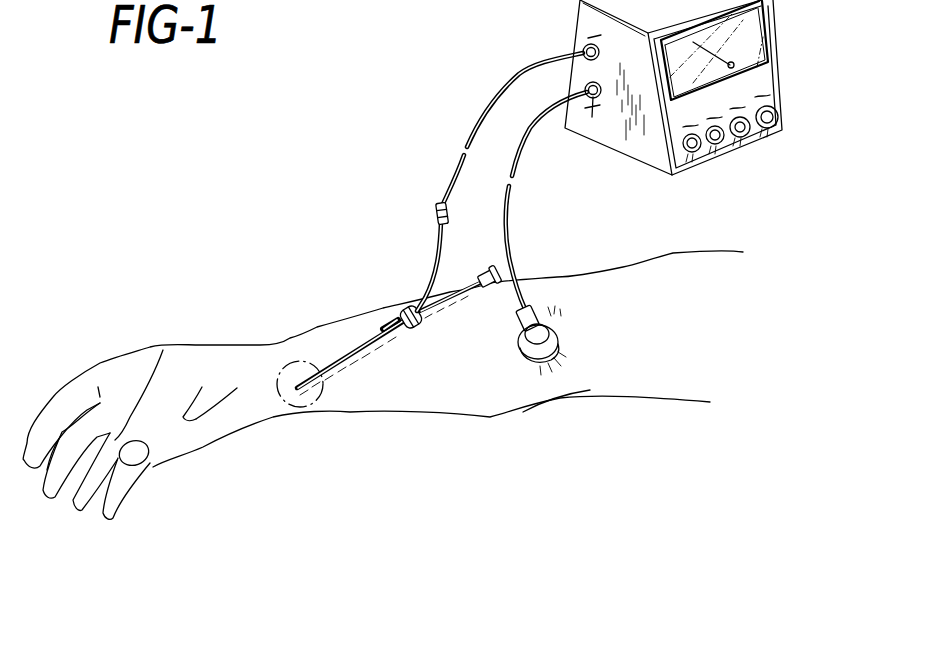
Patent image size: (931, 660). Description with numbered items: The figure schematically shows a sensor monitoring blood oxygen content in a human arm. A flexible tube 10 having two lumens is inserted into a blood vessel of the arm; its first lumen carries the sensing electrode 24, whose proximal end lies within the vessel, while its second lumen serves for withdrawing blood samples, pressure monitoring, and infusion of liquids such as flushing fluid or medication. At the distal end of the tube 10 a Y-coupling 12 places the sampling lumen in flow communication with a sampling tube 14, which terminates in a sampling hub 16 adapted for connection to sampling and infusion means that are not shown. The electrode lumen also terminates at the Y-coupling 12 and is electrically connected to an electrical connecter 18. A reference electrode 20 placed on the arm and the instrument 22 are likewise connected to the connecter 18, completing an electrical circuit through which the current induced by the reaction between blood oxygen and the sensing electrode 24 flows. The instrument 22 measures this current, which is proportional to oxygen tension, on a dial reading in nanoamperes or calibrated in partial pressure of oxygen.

The flexible tube 10 is at (357, 353).
The Y-coupling 12 is at (407, 305).
The sampling tube 14 is at (443, 307).
The sampling hub 16 is at (483, 272).
The electrical connecter 18 is at (440, 204).
The reference electrode 20 is at (553, 328).
The instrument 22 is at (622, 148).
The sensing electrode 24 is at (283, 406).